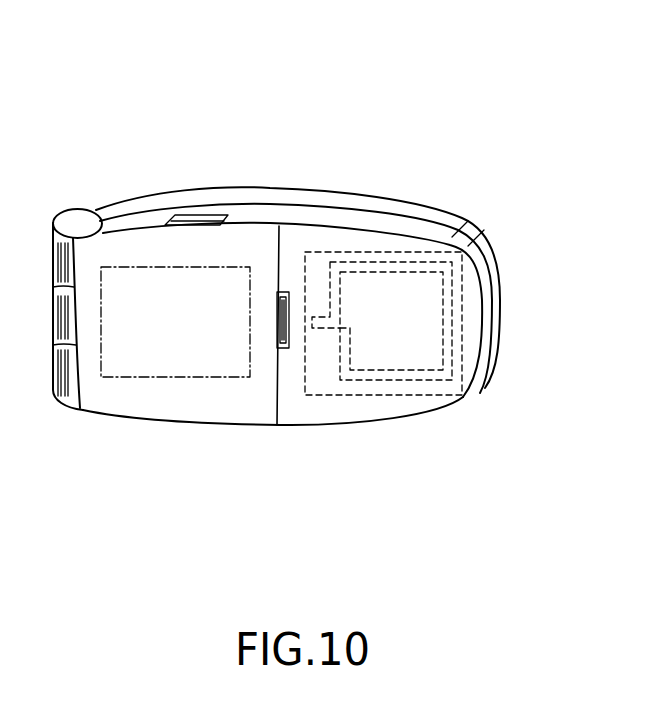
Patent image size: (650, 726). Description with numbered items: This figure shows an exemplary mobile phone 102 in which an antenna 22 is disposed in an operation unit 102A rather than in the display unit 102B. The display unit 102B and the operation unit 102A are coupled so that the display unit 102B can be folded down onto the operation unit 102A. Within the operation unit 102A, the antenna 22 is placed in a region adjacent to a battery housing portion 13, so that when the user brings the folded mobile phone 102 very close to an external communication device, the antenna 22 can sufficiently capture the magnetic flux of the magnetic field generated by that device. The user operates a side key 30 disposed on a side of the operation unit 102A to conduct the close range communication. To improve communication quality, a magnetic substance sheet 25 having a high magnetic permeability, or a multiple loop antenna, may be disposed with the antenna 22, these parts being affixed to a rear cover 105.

The mobile phone 102 is at (470, 108).
The operation unit 102A is at (473, 222).
The display unit 102B is at (403, 212).
The side key 30 is at (182, 218).
The battery housing portion 13 is at (122, 377).
The antenna 22 is at (442, 335).
The magnetic substance sheet 25 is at (415, 395).
The rear cover 105 is at (317, 425).